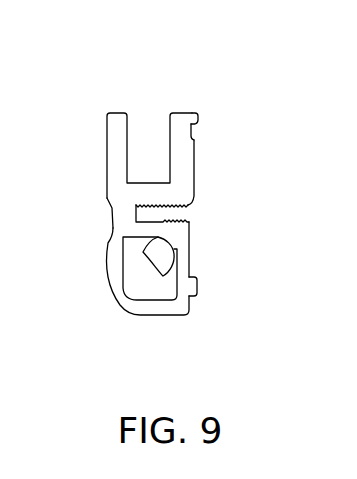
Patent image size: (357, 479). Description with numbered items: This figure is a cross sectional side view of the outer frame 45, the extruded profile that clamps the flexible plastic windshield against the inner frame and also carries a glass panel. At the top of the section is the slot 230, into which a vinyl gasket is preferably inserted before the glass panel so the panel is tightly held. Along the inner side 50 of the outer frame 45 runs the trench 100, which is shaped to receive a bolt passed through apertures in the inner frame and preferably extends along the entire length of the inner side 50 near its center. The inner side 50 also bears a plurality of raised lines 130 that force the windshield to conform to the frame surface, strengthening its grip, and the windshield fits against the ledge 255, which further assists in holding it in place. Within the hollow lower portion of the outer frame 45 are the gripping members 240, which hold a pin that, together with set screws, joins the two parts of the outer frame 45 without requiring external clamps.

The slot 230 is at (146, 123).
The ledge 255 is at (198, 112).
The raised lines 130 is at (194, 141).
The inner side 50 is at (194, 173).
The trench 100 is at (178, 214).
The outer frame 45 is at (195, 248).
The gripping members 240 is at (157, 245).